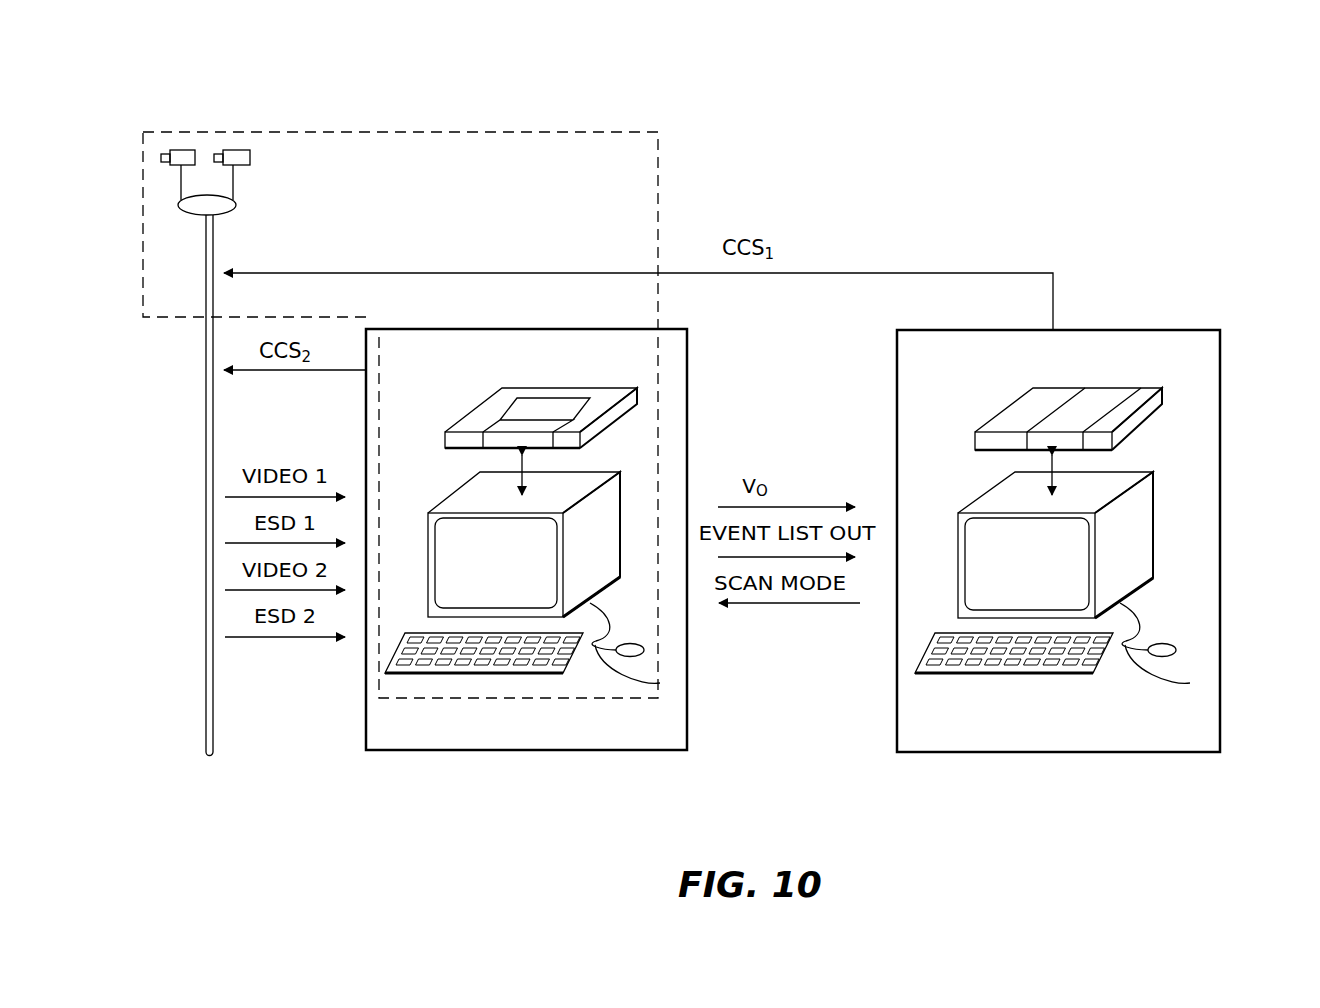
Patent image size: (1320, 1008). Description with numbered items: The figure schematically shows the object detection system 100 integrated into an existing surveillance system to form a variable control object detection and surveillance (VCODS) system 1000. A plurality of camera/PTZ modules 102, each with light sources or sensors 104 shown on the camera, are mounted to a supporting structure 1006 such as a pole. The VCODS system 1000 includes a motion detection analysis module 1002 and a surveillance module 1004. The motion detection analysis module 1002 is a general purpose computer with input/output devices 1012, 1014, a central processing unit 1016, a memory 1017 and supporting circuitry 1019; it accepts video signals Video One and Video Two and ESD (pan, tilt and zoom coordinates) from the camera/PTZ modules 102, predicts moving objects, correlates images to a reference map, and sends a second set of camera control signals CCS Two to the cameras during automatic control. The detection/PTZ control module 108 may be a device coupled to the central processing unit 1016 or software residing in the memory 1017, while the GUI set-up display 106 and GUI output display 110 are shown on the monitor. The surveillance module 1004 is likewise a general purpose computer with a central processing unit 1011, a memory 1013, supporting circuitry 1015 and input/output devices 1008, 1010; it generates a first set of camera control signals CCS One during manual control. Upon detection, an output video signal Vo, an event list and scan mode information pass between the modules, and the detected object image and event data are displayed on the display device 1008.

The variable control object detection and surveillance (VCODS) system 1000 is at (987, 97).
The object detection system 100 is at (660, 160).
The camera pan/tilt/zoom (PTZ) module 102 is at (128, 157).
The light sources 104 is at (241, 150).
The supporting structure 1006 is at (206, 462).
The motion detection analysis module 1002 is at (508, 751).
The surveillance module 1004 is at (1032, 753).
The central processing unit 1016 is at (585, 367).
The memory 1017 is at (489, 395).
The supporting circuitry 1019 is at (445, 438).
The detection/PTZ control module 108 is at (540, 412).
The input/output device 1012 is at (606, 541).
The graphical user interface (GUI) set-up display 106 is at (496, 563).
The GUI output display 110 is at (496, 563).
The input/output device 1014 is at (578, 662).
The central processing unit 1011 is at (1107, 361).
The supporting circuitry 1015 is at (1000, 408).
The memory 1013 is at (1093, 395).
The display device 1008 is at (1153, 553).
The input/output device 1010 is at (1116, 664).